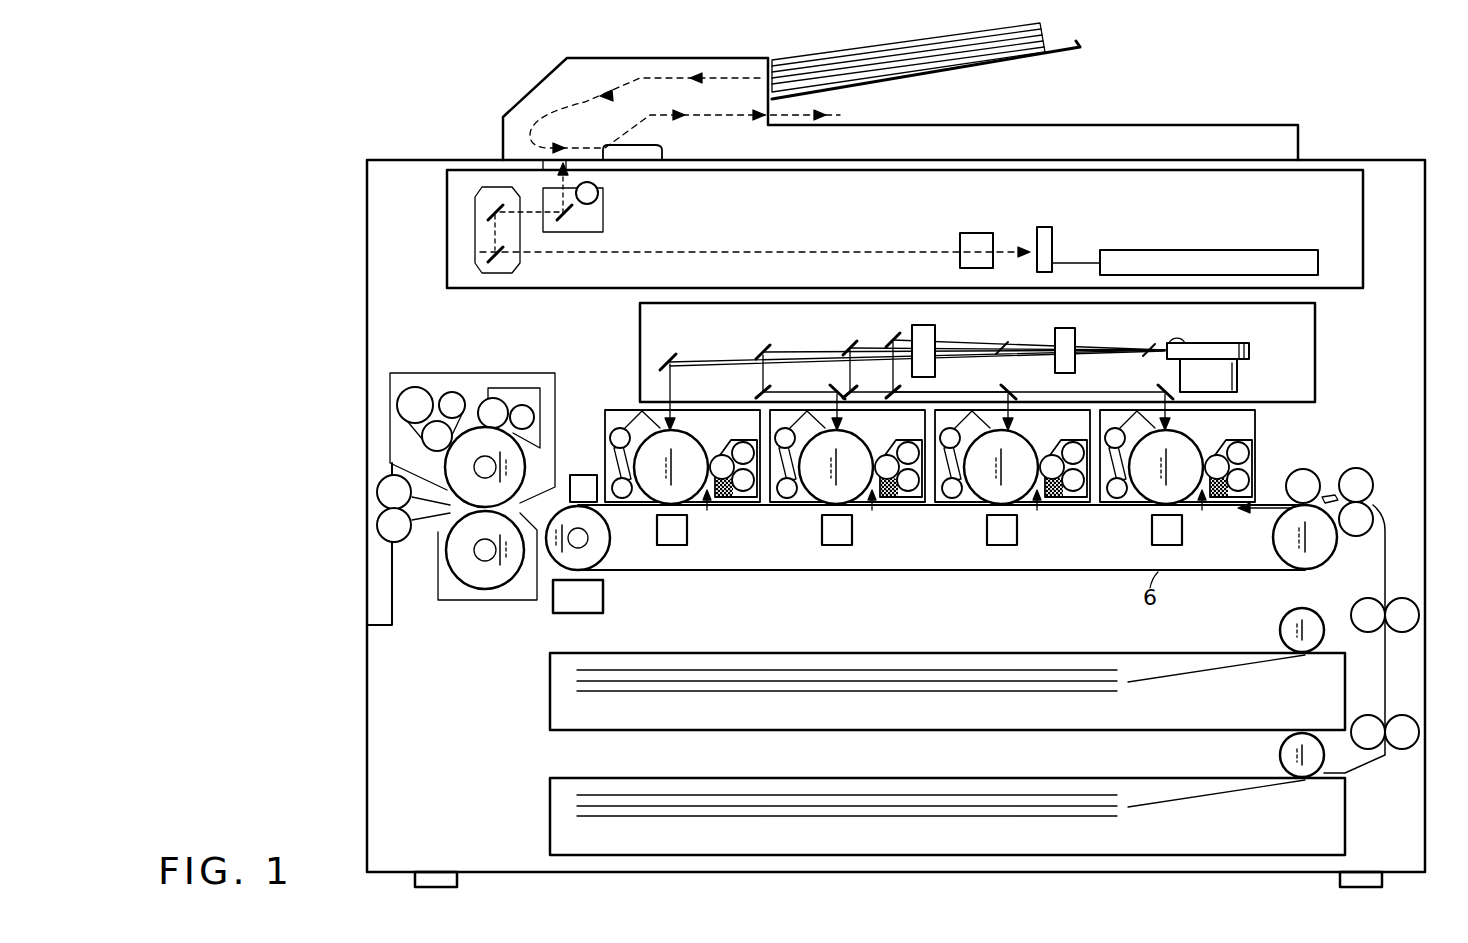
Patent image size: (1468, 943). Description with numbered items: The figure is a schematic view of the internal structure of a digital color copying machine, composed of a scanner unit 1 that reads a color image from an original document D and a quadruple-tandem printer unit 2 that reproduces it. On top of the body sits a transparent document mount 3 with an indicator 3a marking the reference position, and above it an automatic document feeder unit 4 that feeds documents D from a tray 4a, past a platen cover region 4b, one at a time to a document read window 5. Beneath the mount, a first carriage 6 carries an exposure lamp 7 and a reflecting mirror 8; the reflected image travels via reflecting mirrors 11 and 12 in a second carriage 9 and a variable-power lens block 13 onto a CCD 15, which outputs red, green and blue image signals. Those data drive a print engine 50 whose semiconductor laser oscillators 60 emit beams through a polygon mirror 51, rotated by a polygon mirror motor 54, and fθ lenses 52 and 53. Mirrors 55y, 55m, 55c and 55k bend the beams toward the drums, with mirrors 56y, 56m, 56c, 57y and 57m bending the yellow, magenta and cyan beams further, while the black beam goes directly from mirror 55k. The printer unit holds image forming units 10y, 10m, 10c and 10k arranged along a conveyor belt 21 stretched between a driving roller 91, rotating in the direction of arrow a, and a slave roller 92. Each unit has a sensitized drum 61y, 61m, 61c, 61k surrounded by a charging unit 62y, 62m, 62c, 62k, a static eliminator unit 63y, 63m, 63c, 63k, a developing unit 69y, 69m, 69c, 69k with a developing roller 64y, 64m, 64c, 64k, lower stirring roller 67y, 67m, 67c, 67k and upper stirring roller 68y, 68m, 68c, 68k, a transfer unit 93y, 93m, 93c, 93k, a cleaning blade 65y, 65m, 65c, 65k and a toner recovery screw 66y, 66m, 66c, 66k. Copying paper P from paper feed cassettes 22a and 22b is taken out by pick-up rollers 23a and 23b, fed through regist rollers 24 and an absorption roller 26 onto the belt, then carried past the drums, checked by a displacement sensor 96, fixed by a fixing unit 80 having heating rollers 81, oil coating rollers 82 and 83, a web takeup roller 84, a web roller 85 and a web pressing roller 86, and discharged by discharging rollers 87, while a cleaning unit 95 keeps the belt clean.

The scanner unit 1 is at (1337, 183).
The quadruple-tandem-printer unit 2 is at (1425, 400).
The document mount 3 is at (884, 172).
The indicator 3a is at (660, 150).
The automatic document feeder unit 4 is at (640, 57).
The tray 4a is at (1075, 50).
The platen cover 4b is at (918, 125).
The document read window 5 is at (553, 172).
The first carriage 6 is at (605, 215).
The exposure lamp 7 is at (600, 193).
The reflecting mirror 8 is at (572, 218).
The second carriage 9 is at (518, 265).
The image forming unit 10k is at (682, 477).
The image forming unit 10c is at (847, 477).
The image forming unit 10m is at (1012, 477).
The image forming unit 10y is at (1177, 477).
The reflecting mirror 11 is at (493, 212).
The reflecting mirror 12 is at (495, 258).
The variable-power lens block 13 is at (975, 233).
The CCD 15 is at (1044, 227).
The conveyor belt 21 is at (1265, 500).
The paper feed cassette 22a is at (550, 688).
The paper feed cassette 22b is at (550, 812).
The pick-up roller 23a is at (1280, 630).
The pick-up roller 23b is at (1280, 755).
The regist rollers 24 is at (1355, 468).
The absorption roller 26 is at (1303, 469).
The print engine 50 is at (1315, 343).
The polygon mirror 51 is at (1250, 351).
The fθ lens 52 is at (1075, 335).
The fθ lens 53 is at (935, 330).
The polygon mirror motor 54 is at (1238, 377).
The mirror 55k is at (668, 358).
The mirror 55c is at (763, 350).
The mirror 55m is at (850, 346).
The mirror 55y is at (893, 338).
The mirror 56c is at (760, 390).
The mirror 56m is at (845, 388).
The mirror 56y is at (890, 392).
The mirror 57m is at (1003, 350).
The mirror 57y is at (1150, 348).
The semiconductor laser oscillator 60 is at (1182, 335).
The sensitized drum 61k is at (697, 441).
The sensitized drum 61c is at (862, 441).
The sensitized drum 61m is at (1027, 441).
The sensitized drum 61y is at (1192, 441).
The charging unit 62k is at (632, 410).
The charging unit 62c is at (832, 391).
The charging unit 62m is at (1012, 391).
The charging unit 62y is at (1162, 390).
The static eliminator unit 63k is at (612, 434).
The static eliminator unit 63c is at (780, 430).
The static eliminator unit 63m is at (950, 430).
The static eliminator unit 63y is at (1115, 430).
The developing roller 64k is at (723, 493).
The developing roller 64c is at (888, 493).
The developing roller 64m is at (1053, 493).
The developing roller 64y is at (1218, 493).
The cleaning blade 65k is at (613, 458).
The cleaning blade 65c is at (782, 480).
The cleaning blade 65m is at (947, 480).
The cleaning blade 65y is at (1112, 480).
The toner recovery screw 66k is at (622, 498).
The toner recovery screw 66c is at (787, 498).
The toner recovery screw 66m is at (952, 498).
The toner recovery screw 66y is at (1117, 498).
The lower stirring roller 67k is at (738, 495).
The lower stirring roller 67c is at (903, 495).
The lower stirring roller 67m is at (1068, 495).
The lower stirring roller 67y is at (1246, 441).
The upper stirring roller 68k is at (743, 508).
The upper stirring roller 68c is at (907, 508).
The upper stirring roller 68m is at (1076, 508).
The upper stirring roller 68y is at (1253, 508).
The developing unit 69k is at (727, 493).
The developing unit 69c is at (892, 493).
The developing unit 69m is at (1057, 493).
The developing unit 69y is at (1222, 493).
The fixing unit 80 is at (562, 375).
The heating roller 81 is at (485, 589).
The oil coating roller 82 is at (522, 405).
The oil coating roller 83 is at (495, 398).
The web takeup roller 84 is at (452, 392).
The web roller 85 is at (415, 388).
The web pressing roller 86 is at (425, 447).
The discharging rollers 87 is at (404, 538).
The driving roller 91 is at (608, 550).
The slave roller 92 is at (1318, 569).
The transfer unit 93k is at (687, 545).
The transfer unit 93c is at (852, 545).
The transfer unit 93m is at (1017, 545).
The transfer unit 93y is at (1182, 545).
The cleaning unit 95 is at (603, 598).
The displacement sensor 96 is at (570, 495).
The arrow a is at (1264, 518).
The original document D is at (848, 58).
The copying paper P is at (955, 668).